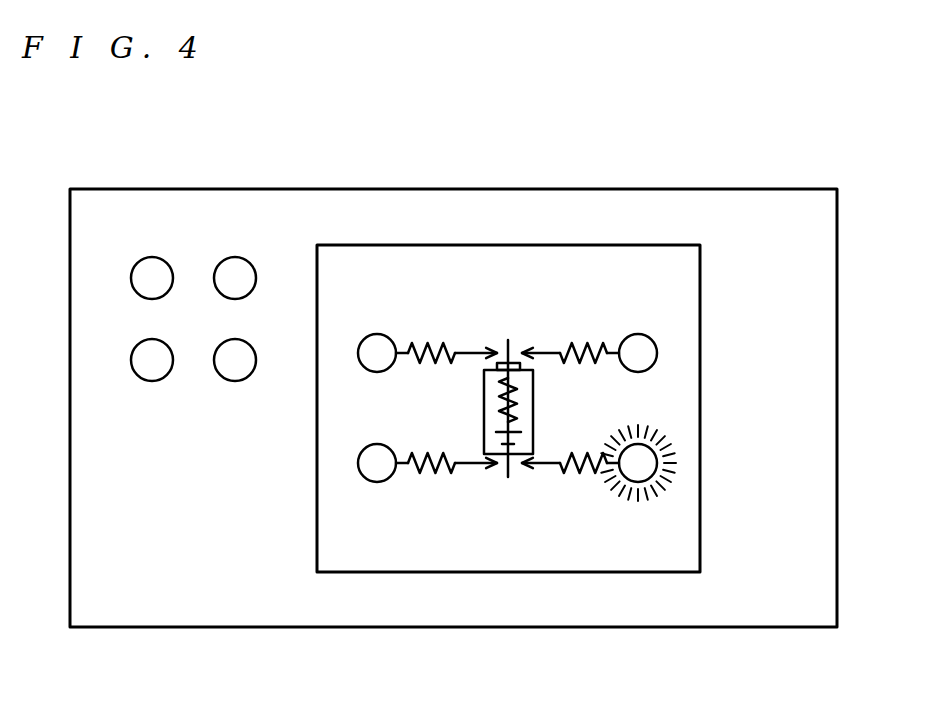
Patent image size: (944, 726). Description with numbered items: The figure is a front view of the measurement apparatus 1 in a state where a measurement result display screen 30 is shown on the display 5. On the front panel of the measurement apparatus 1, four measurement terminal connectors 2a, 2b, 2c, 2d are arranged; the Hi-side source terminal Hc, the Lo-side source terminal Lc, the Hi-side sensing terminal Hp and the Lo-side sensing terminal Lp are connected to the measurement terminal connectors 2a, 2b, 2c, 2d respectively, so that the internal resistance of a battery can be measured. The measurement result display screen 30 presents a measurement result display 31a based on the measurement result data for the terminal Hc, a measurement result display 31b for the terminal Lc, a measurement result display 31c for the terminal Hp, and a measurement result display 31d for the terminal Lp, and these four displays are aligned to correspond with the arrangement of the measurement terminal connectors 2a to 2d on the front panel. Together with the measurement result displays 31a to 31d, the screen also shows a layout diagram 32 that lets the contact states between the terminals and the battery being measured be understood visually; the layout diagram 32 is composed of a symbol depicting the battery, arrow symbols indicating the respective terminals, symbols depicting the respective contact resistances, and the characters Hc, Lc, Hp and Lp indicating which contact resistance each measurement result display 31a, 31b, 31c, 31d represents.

The measurement apparatus 1 is at (756, 189).
The measurement terminal connector 2a is at (133, 267).
The measurement terminal connector 2b is at (132, 373).
The measurement terminal connector 2c is at (253, 263).
The measurement terminal connector 2d is at (252, 372).
The display 5 is at (655, 245).
The measurement result display screen 30 is at (369, 285).
The measurement result display 31a is at (436, 292).
The measurement result display 31b is at (436, 522).
The measurement result display 31c is at (588, 292).
The measurement result display 31d is at (588, 522).
The layout diagram 32 is at (507, 318).